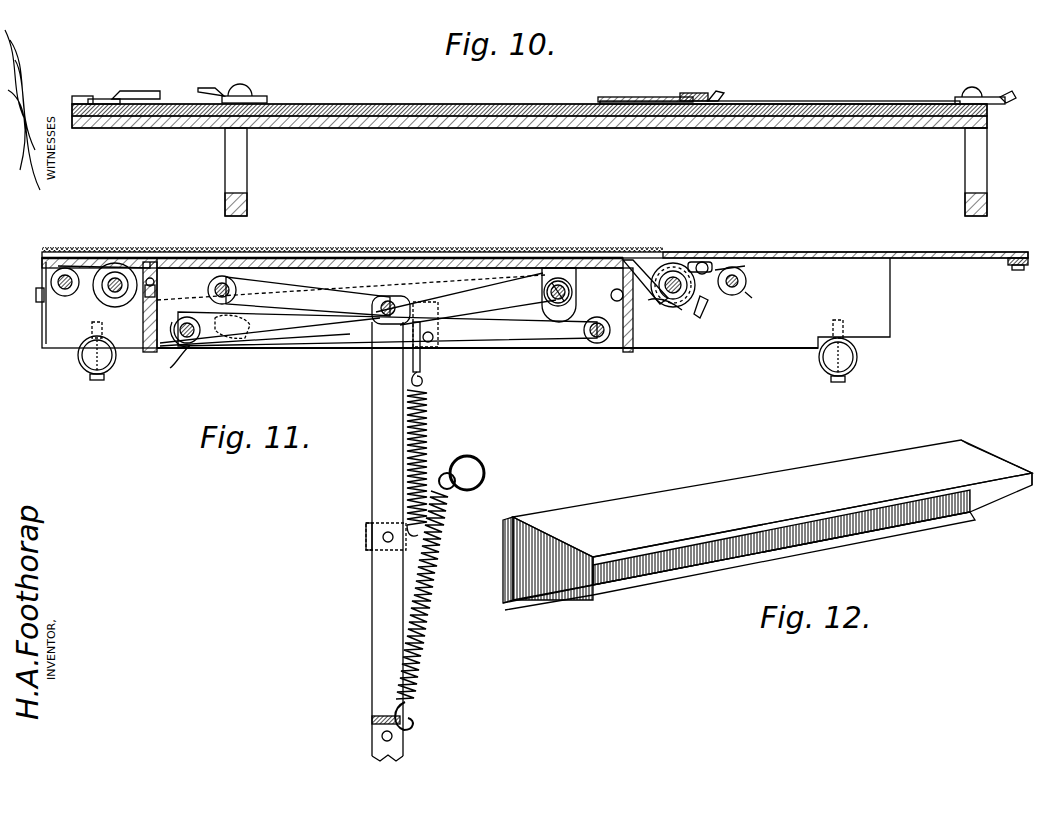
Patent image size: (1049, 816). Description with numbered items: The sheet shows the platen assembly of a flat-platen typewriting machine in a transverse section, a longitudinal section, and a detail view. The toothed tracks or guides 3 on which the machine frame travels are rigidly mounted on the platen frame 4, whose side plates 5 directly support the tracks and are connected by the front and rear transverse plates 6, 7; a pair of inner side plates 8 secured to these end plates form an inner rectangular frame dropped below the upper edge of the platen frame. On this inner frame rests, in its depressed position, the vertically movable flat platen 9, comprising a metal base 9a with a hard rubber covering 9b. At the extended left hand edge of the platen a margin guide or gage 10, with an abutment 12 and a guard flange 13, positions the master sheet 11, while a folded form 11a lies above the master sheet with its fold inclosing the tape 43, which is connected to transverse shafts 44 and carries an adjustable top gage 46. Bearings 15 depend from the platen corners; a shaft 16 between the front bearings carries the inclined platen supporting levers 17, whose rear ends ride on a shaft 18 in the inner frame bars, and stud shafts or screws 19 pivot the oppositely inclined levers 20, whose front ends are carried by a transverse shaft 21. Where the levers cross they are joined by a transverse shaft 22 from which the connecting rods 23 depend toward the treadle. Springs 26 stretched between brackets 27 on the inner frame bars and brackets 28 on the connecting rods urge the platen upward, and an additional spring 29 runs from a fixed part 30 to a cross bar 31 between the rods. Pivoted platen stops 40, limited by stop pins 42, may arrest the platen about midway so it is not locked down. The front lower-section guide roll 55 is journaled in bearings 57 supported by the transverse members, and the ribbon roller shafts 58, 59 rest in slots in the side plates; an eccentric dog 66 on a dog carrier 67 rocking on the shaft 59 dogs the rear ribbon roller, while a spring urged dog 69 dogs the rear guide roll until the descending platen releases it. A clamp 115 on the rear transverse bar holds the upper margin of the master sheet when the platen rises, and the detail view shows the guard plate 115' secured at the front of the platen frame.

In FIG. 10, the tracks or guides 3 is at (240, 88).
In FIG. 11, the tracks or guides 3 is at (806, 252).
In FIG. 11, the platen frame 4 is at (890, 295).
In FIG. 10, the side plates 5 is at (248, 203).
In FIG. 11, the side plates 5 is at (744, 348).
In FIG. 11, the front transverse plate 6 is at (146, 352).
In FIG. 11, the rear transverse plate 7 is at (628, 352).
In FIG. 11, the inner side plates 8 is at (300, 346).
In FIG. 10, the platen 9 is at (806, 127).
In FIG. 11, the platen 9 is at (456, 252).
In FIG. 10, the metal base 9a is at (868, 128).
In FIG. 10, the covering 9b is at (893, 105).
In FIG. 10, the margin guide or gage 10 is at (90, 98).
In FIG. 10, the master sheet 11 is at (838, 102).
In FIG. 11, the master sheet 11 is at (66, 296).
In FIG. 10, the folded form 11a is at (640, 97).
In FIG. 10, the abutment 12 is at (76, 96).
In FIG. 10, the guard flange 13 is at (148, 91).
In FIG. 11, the bearings 15 is at (208, 288).
In FIG. 11, the shaft 16 is at (308, 296).
In FIG. 11, the platen supporting levers 17 is at (310, 306).
In FIG. 11, the shaft 18 is at (592, 343).
In FIG. 11, the stud shafts or screws 19 is at (544, 292).
In FIG. 11, the inclined levers 20 is at (340, 343).
In FIG. 11, the transverse shaft 21 is at (186, 340).
In FIG. 11, the transverse shaft 22 is at (390, 302).
In FIG. 11, the connecting rods 23 is at (372, 478).
In FIG. 11, the springs 26 is at (430, 422).
In FIG. 11, the brackets 27 is at (422, 362).
In FIG. 11, the brackets 28 is at (366, 546).
In FIG. 11, the additional spring 29 is at (432, 600).
In FIG. 11, the fixed part 30 is at (486, 470).
In FIG. 11, the cross bar 31 is at (374, 718).
In FIG. 11, the platen stops 40 is at (192, 349).
In FIG. 11, the stop pins 42 is at (246, 338).
In FIG. 10, the tape 43 is at (716, 96).
In FIG. 11, the tape 43 is at (82, 266).
In FIG. 11, the transverse shafts 44 is at (737, 294).
In FIG. 10, the top gage 46 is at (690, 93).
In FIG. 11, the guide roll 55 is at (156, 292).
In FIG. 11, the bearings 57 is at (656, 303).
In FIG. 11, the shaft 58 is at (117, 275).
In FIG. 11, the shaft 59 is at (673, 277).
In FIG. 11, the eccentric dog 66 is at (708, 265).
In FIG. 11, the dog carrier 67 is at (699, 262).
In FIG. 11, the spring urged dog 69 is at (611, 295).
In FIG. 11, the clamp 115 is at (23, 301).
In FIG. 12, the guide channel 115' is at (767, 525).